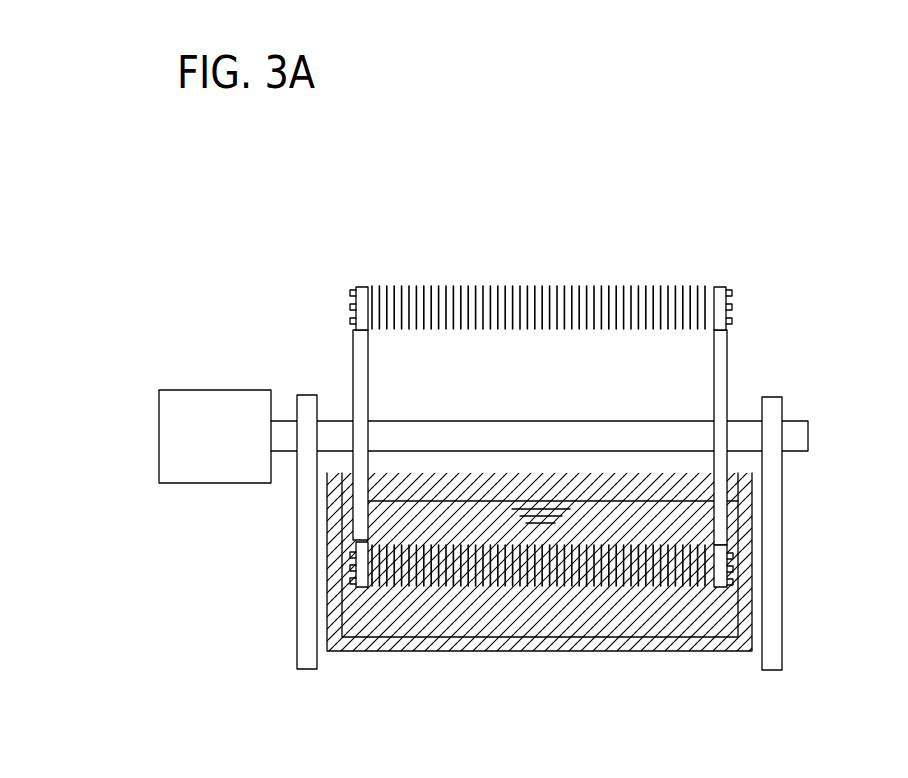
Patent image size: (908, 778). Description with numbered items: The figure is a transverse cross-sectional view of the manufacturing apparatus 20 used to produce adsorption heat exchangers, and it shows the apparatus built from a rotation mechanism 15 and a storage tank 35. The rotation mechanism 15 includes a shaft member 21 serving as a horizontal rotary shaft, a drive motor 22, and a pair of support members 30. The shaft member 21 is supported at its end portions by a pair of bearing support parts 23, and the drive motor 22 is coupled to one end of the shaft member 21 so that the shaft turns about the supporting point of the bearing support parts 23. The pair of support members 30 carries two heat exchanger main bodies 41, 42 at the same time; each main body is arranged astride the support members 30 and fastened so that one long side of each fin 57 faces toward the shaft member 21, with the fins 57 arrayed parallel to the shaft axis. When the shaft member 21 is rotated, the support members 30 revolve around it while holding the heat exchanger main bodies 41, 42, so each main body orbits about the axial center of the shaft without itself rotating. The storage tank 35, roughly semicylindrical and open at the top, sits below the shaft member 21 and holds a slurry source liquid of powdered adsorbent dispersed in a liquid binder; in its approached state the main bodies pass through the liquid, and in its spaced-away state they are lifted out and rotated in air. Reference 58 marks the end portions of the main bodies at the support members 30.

The rotation mechanism 15 is at (553, 447).
The manufacturing apparatus 20 is at (539, 447).
The shaft member 21 is at (741, 421).
The drive motor 22 is at (215, 390).
The bearing support part 23 is at (297, 588).
The support member 30 is at (345, 363).
The storage tank 35 is at (483, 652).
The heat exchanger main body 41 is at (381, 273).
The heat exchanger main body 42 is at (685, 607).
The fin 57 is at (495, 276).
The engagement teeth 58 is at (350, 307).